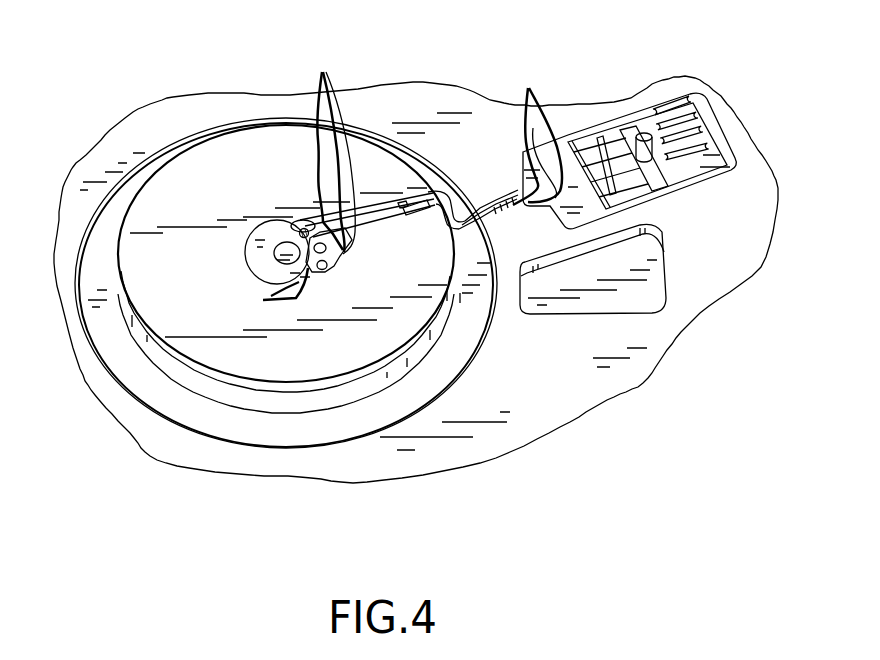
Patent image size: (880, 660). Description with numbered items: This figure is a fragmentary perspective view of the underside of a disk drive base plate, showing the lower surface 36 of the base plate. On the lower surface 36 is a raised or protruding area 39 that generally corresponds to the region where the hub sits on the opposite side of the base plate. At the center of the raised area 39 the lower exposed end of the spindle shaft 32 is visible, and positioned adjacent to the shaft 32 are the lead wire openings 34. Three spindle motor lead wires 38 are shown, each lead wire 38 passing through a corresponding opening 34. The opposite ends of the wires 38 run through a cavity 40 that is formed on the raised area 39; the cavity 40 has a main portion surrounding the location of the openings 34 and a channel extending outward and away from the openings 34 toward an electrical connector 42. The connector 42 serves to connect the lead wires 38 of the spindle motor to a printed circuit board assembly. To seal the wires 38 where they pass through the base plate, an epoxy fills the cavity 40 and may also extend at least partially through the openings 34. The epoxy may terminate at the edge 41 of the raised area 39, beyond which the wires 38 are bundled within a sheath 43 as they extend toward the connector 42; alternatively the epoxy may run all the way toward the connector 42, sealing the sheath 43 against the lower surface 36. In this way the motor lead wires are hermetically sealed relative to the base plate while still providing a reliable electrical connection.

The spindle shaft 32 is at (272, 252).
The lead wire openings 34 is at (302, 221).
The lower surface 36 is at (543, 378).
The spindle motor lead wires 38 is at (437, 148).
The raised area 39 is at (228, 184).
The cavity 40 is at (375, 232).
The edge of the raised area 41 is at (406, 164).
The electrical connector 42 is at (698, 194).
The sheath 43 is at (482, 222).